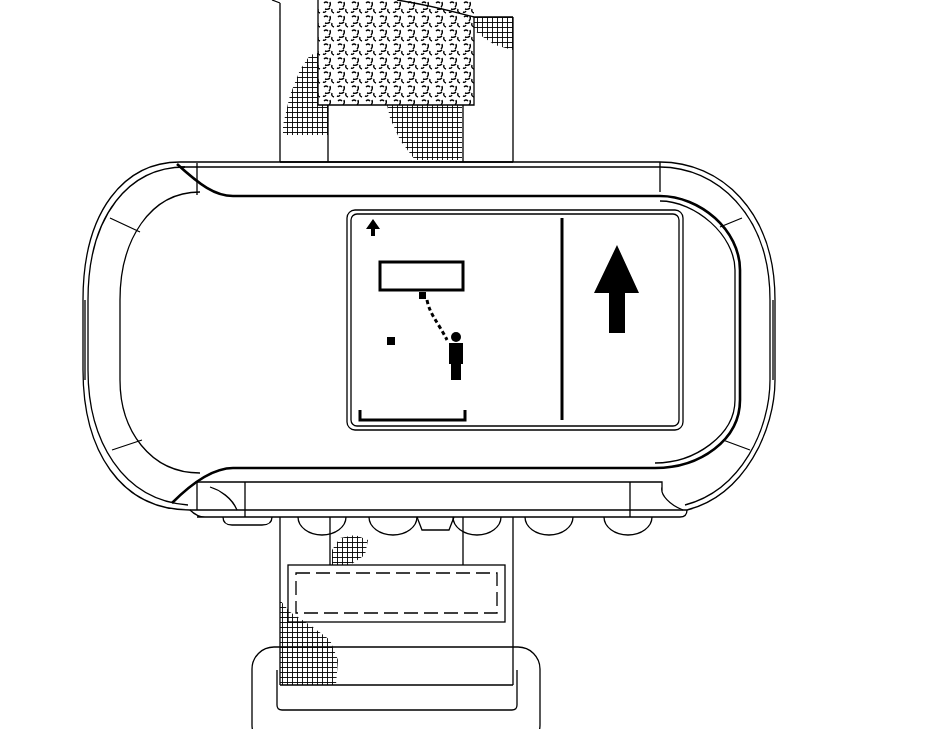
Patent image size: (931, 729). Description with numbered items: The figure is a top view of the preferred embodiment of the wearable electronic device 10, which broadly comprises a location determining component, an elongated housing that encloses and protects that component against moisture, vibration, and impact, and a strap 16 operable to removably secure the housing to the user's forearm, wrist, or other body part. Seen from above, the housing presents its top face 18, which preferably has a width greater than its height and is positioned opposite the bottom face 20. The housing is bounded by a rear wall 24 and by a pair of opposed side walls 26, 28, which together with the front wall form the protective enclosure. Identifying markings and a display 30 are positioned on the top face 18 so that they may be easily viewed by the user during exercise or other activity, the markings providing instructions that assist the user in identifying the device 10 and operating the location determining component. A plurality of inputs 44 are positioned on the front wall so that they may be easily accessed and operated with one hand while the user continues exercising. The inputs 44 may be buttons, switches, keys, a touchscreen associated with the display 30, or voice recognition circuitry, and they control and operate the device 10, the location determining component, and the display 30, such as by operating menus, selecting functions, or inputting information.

The device 10 is at (118, 46).
The strap 16 is at (505, 60).
The top face 18 is at (170, 250).
The bottom face 20 is at (752, 440).
The rear wall 24 is at (533, 161).
The side wall 26 is at (88, 340).
The side wall 28 is at (775, 340).
The display 30 is at (650, 287).
The inputs 44 is at (557, 543).